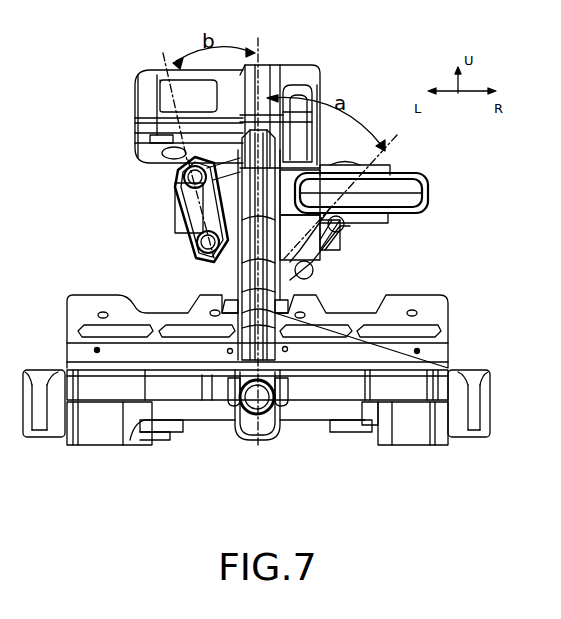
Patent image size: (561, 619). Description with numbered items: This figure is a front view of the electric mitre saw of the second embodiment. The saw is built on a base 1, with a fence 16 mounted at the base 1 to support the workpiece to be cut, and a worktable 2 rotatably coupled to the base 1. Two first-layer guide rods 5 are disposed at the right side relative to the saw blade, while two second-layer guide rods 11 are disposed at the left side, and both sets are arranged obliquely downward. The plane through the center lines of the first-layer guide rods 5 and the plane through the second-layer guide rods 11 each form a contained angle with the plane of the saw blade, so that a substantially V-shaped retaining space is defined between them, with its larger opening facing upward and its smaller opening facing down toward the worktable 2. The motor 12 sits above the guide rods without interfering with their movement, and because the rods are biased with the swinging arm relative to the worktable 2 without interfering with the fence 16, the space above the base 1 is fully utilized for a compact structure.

The base 1 is at (412, 432).
The worktable 2 is at (320, 388).
The first-layer guide rod 5 is at (350, 228).
The second-layer guide rod 11 is at (178, 185).
The motor 12 is at (165, 95).
The fence 16 is at (398, 310).